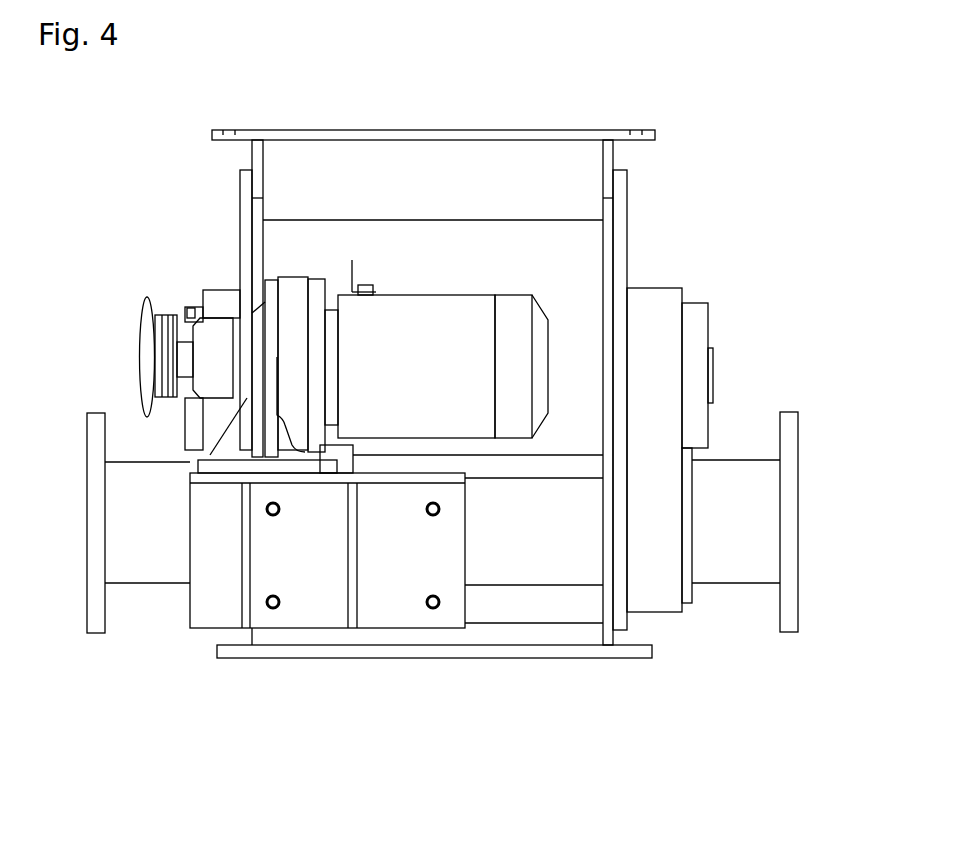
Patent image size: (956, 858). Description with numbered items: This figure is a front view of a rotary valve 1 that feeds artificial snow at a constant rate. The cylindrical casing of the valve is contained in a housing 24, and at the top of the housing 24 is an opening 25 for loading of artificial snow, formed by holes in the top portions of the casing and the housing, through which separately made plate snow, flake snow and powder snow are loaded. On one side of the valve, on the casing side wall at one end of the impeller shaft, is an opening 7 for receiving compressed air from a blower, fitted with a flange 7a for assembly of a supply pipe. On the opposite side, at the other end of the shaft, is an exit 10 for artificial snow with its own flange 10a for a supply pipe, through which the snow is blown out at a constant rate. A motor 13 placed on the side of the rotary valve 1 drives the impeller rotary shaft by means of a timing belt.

The rotary valve 1 is at (660, 240).
The opening for receiving compressed air 7 is at (87, 521).
The flange 7a is at (93, 618).
The exit for artificial snow 10 is at (800, 512).
The flange 10a is at (800, 620).
The motor 13 is at (413, 410).
The housing 24 is at (382, 163).
The opening for loading of artificial snow 25 is at (457, 125).